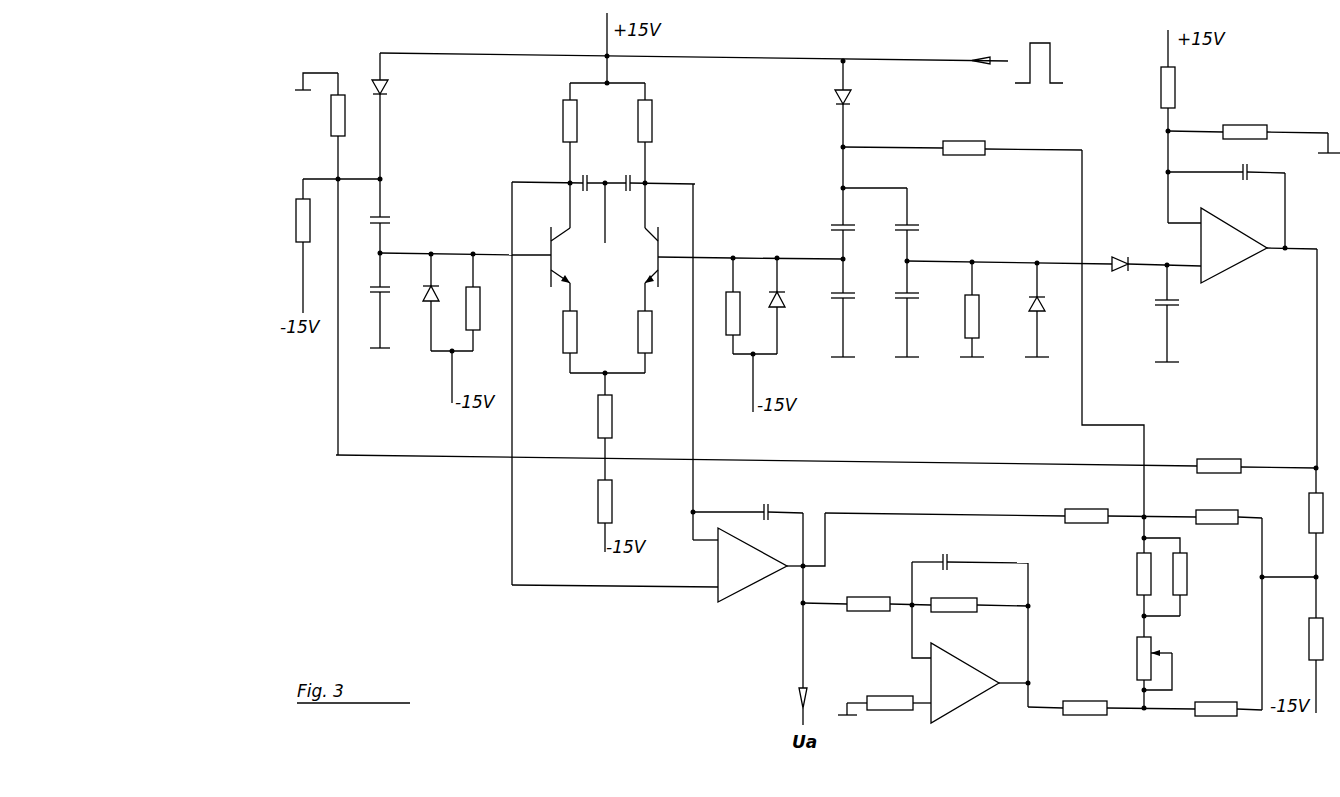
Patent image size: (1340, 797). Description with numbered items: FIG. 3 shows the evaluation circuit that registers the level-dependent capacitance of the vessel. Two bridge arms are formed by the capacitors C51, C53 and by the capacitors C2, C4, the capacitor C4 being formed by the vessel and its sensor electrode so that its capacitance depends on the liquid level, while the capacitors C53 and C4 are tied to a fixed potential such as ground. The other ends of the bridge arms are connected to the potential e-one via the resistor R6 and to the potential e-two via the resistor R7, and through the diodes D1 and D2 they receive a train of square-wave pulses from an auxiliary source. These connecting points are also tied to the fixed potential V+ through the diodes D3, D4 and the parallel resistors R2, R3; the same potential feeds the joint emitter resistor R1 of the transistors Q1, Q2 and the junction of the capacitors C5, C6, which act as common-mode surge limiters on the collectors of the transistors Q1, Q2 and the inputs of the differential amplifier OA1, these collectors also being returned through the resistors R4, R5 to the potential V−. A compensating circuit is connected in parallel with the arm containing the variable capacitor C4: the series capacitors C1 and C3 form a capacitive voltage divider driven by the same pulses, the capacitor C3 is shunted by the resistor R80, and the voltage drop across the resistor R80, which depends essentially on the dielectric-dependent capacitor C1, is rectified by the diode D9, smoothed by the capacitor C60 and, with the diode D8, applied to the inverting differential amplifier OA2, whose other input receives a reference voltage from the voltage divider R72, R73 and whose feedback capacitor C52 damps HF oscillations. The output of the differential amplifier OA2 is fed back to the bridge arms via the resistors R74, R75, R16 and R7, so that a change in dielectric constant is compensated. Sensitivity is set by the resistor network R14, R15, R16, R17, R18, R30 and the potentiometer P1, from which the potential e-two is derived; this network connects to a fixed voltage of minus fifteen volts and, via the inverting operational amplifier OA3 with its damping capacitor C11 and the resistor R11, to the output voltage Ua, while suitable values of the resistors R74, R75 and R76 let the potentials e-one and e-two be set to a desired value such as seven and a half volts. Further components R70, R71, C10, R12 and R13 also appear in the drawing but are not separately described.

The resistor R70 is at (320, 264).
The resistor R71 is at (317, 246).
The diode D1 is at (396, 135).
The capacitor C51 is at (398, 232).
The capacitor C53 is at (393, 300).
The diode D3 is at (441, 302).
The resistor R2 is at (485, 302).
The resistor R4 is at (555, 155).
The resistor R5 is at (604, 228).
The capacitor C5 is at (584, 171).
The capacitor C6 is at (625, 171).
The transistor Q1 is at (545, 257).
The transistor Q2 is at (680, 257).
The resistor R6 is at (656, 328).
The joint emitter resistor R1 is at (617, 462).
The resistor R3 is at (719, 306).
The diode D4 is at (787, 306).
The diode D2 is at (857, 143).
The resistor R7 is at (962, 137).
The capacitor C2 is at (829, 256).
The capacitor C4 is at (833, 315).
The capacitor C1 is at (917, 256).
The capacitor C3 is at (916, 316).
The shunt resistor R80 is at (987, 309).
The diode D8 is at (1044, 310).
The diode D9 is at (1155, 255).
The capacitor C60 is at (1181, 313).
The voltage divider resistor R72 is at (1147, 126).
The voltage divider resistor R73 is at (1254, 130).
The feedback capacitor C52 is at (1226, 200).
The differential amplifier OA2 is at (1242, 245).
The resistor R74 is at (826, 455).
The resistor R75 is at (1298, 543).
The resistor R76 is at (1297, 665).
The capacitor C10 is at (748, 503).
The differential amplifier OA1 is at (760, 565).
The resistor R14 is at (1010, 506).
The resistor R16 is at (1229, 507).
The resistor R11 is at (867, 594).
The resistor R12 is at (979, 595).
The capacitor C11 is at (970, 552).
The operational amplifier OA3 is at (979, 683).
The resistor R13 is at (884, 695).
The resistor R15 is at (1111, 698).
The resistor R17 is at (1228, 698).
The resistor R18 is at (1123, 595).
The resistor R30 is at (1184, 584).
The potentiometer P1 is at (1157, 670).